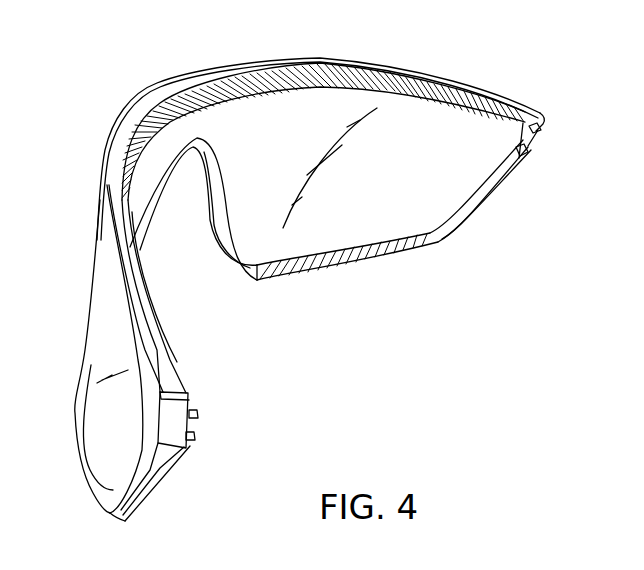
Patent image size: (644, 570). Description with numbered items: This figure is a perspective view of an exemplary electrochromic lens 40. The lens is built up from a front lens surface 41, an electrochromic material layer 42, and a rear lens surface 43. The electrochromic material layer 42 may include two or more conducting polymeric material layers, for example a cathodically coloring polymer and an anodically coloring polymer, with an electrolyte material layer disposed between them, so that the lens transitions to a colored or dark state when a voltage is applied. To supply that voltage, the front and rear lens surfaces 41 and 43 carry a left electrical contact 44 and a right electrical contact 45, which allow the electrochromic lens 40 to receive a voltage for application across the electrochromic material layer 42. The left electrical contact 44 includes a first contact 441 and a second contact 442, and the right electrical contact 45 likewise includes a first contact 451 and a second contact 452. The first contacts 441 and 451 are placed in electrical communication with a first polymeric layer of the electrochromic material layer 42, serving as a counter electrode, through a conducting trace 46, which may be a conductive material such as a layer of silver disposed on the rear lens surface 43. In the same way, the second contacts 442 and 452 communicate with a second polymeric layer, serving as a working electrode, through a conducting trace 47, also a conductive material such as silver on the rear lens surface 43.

The electrochromic lens 40 is at (131, 91).
The front lens surface 41 is at (90, 492).
The electrochromic material layer 42 is at (147, 498).
The rear lens surface 43 is at (160, 473).
The left electrical contact 44 is at (206, 389).
The first contact 441 is at (194, 437).
The second contact 442 is at (197, 418).
The right electrical contact 45 is at (549, 102).
The first contact 451 is at (527, 158).
The second contact 452 is at (543, 125).
The conducting trace 46 is at (447, 233).
The conducting trace 47 is at (483, 103).